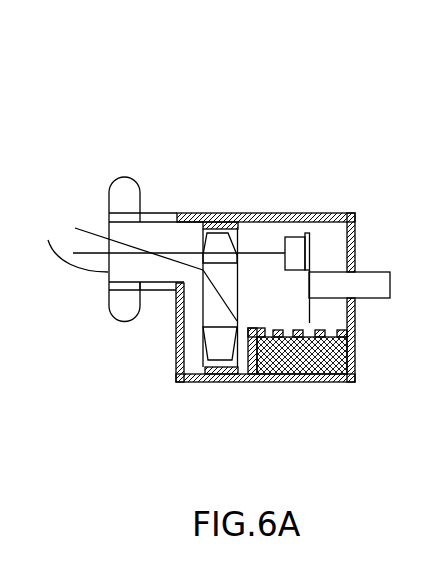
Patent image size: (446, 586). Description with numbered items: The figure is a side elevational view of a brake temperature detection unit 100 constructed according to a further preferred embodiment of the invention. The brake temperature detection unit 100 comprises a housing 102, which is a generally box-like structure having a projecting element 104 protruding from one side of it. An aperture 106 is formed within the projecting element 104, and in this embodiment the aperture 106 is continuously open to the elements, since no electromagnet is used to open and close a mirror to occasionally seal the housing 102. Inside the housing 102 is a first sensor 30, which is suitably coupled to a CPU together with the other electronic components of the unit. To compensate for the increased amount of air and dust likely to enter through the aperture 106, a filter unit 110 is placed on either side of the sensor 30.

The brake temperature detection unit 100 is at (285, 113).
The housing 102 is at (328, 213).
The projecting element 104 is at (157, 290).
The aperture 106 is at (50, 242).
The first sensor 30 is at (298, 233).
The filter unit 110 is at (302, 380).